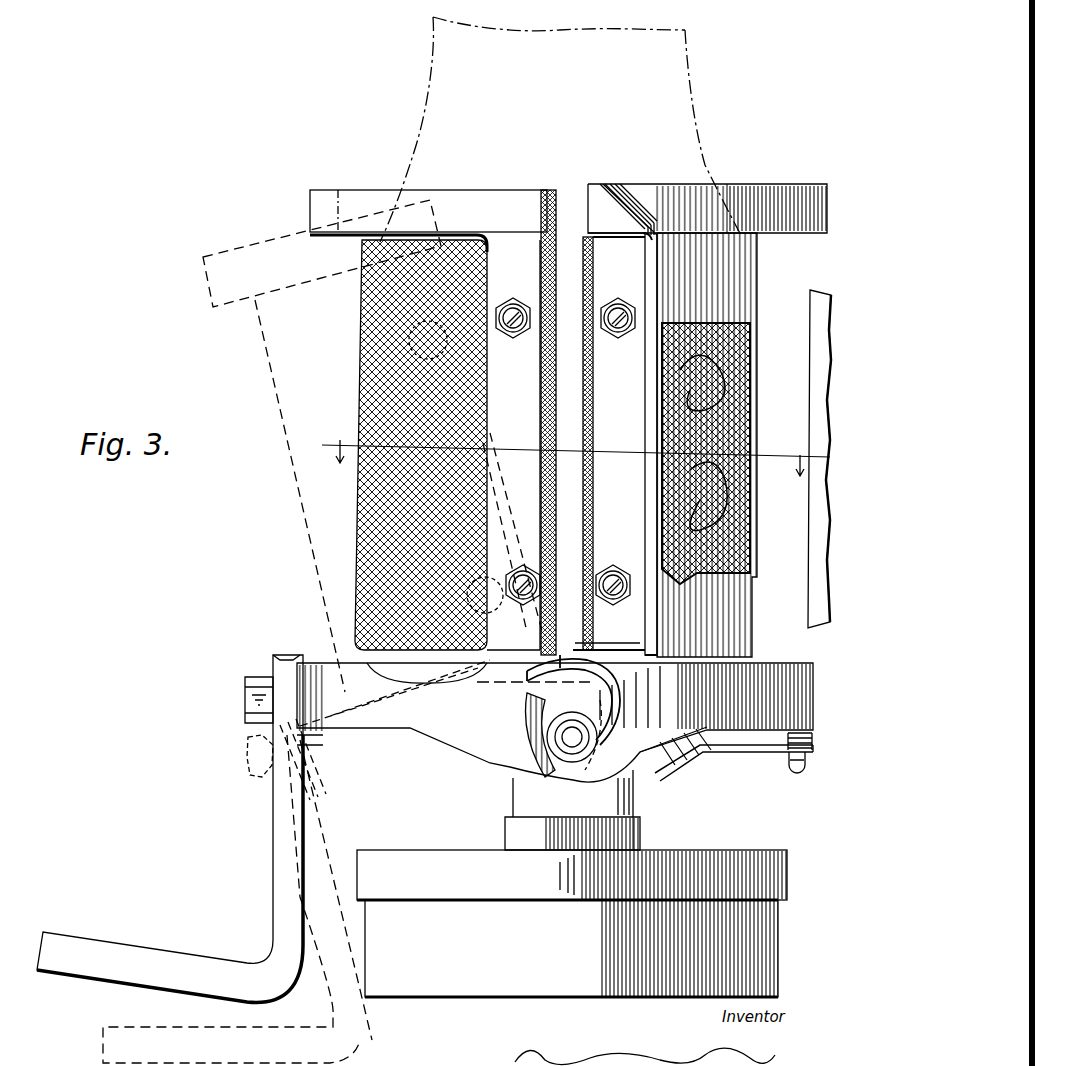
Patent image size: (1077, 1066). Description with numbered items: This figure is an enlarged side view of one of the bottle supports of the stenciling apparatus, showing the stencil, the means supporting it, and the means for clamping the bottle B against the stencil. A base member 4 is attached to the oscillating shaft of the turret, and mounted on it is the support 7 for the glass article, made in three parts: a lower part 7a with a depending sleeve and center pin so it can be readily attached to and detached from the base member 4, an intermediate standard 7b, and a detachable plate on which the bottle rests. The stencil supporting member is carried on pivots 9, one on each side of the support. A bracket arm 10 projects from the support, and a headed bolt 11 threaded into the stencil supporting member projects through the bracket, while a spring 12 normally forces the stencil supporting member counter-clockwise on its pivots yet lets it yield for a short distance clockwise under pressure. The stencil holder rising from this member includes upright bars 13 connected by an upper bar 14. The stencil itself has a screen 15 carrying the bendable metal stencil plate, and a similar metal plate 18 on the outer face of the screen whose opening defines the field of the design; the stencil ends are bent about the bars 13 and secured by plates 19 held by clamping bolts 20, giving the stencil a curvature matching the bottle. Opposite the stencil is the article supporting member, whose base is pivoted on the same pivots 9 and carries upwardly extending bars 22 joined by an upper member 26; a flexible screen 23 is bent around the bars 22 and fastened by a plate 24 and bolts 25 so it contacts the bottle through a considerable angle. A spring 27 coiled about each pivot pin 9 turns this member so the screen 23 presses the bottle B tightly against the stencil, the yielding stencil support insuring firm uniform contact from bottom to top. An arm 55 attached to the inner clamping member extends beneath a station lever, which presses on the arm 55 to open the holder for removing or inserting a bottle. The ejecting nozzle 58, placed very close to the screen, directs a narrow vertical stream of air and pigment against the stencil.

The bottle B is at (690, 125).
The upper member 26 is at (320, 203).
The bars 22 is at (500, 236).
The screen 23 is at (362, 360).
The plate 24 is at (505, 445).
The bolts 25 is at (513, 298).
The plates 19 is at (609, 443).
The clamping bolts 20 is at (624, 288).
The upright bars 13 is at (657, 257).
The metal plate 18 is at (740, 255).
The upper bar 14 is at (798, 176).
The screen 15 is at (753, 358).
The ejecting nozzle 58 is at (818, 325).
The base member 4 is at (566, 454).
The pivots 9 is at (572, 740).
The spring 27 is at (610, 702).
The bracket arm 10 is at (733, 750).
The spring 12 is at (787, 745).
The headed bolt 11 is at (797, 775).
The support 7 is at (572, 810).
The lower part 7a is at (450, 862).
The intermediate standard 7b is at (617, 795).
The arm 55 is at (205, 968).